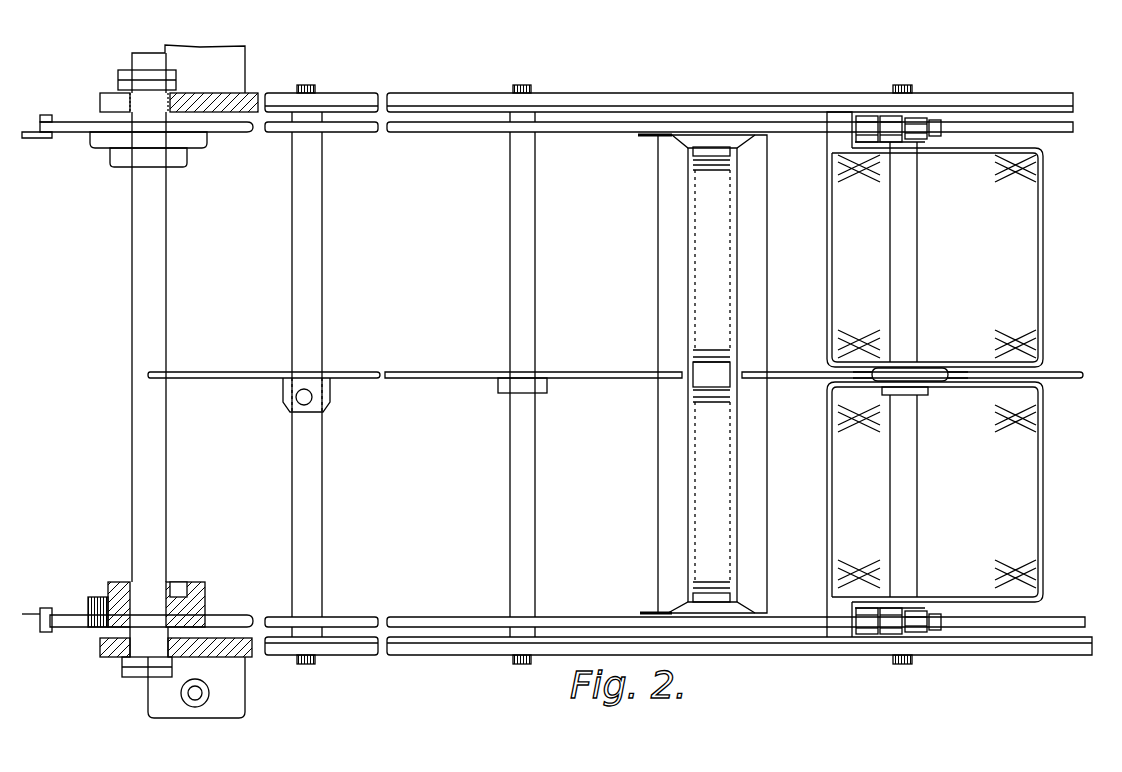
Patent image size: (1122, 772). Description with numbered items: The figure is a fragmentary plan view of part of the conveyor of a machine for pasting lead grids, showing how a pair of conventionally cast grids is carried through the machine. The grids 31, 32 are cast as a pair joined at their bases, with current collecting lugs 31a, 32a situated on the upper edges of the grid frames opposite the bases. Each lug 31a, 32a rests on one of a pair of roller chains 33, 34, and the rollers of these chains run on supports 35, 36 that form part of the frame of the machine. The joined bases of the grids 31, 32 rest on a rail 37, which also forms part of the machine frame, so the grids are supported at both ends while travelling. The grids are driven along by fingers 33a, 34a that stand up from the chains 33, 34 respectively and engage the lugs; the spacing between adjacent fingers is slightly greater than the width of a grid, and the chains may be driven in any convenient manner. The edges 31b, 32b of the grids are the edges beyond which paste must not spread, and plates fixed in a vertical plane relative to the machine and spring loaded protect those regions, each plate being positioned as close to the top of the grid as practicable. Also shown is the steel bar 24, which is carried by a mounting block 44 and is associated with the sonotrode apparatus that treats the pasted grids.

The bar 24 is at (735, 549).
The grid 31 is at (1030, 334).
The lug 31a is at (833, 117).
The edge 31b is at (963, 150).
The grid 32 is at (1030, 484).
The lug 32a is at (840, 623).
The edge 32b is at (955, 383).
The roller chain 33 is at (920, 127).
The finger 33a is at (872, 140).
The roller chain 34 is at (918, 626).
The finger 34a is at (880, 611).
The support 35 is at (1020, 126).
The support 36 is at (1043, 626).
The rail 37 is at (1085, 358).
The mounting block 44 is at (757, 456).